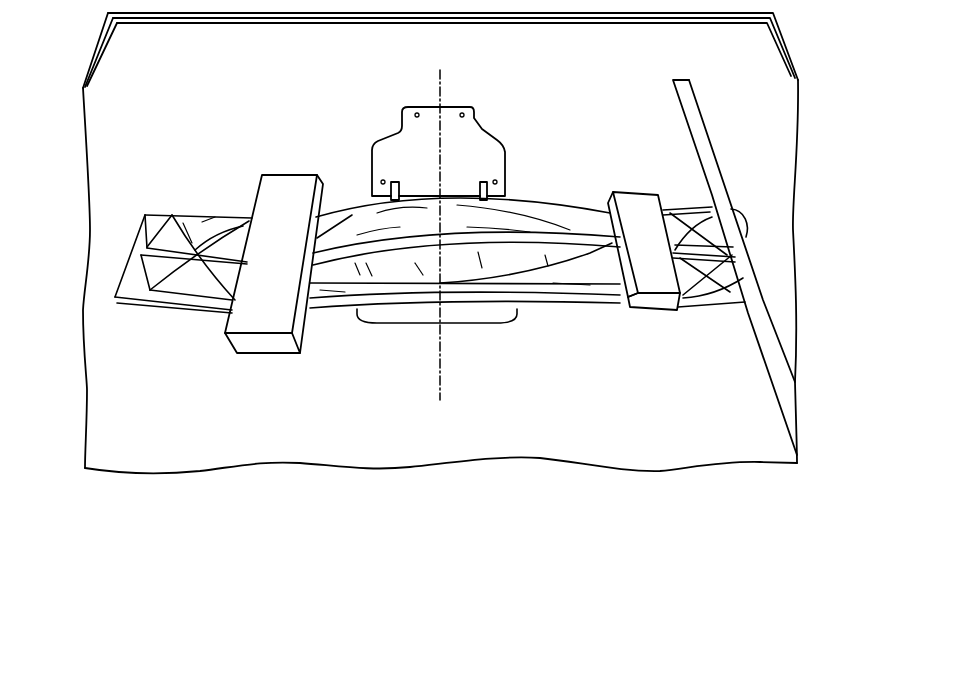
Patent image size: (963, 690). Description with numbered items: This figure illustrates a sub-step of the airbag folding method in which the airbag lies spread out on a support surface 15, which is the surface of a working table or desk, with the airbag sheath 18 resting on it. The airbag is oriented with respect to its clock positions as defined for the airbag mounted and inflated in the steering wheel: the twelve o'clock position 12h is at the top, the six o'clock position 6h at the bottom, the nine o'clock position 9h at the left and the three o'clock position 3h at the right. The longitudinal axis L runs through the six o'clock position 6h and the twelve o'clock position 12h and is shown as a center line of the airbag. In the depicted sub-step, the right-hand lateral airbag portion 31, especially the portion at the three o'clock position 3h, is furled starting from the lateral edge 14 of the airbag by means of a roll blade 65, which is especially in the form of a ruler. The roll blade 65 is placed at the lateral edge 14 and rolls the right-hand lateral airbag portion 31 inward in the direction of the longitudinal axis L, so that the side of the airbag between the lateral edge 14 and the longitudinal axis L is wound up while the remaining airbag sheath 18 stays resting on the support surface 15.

The lateral edge 14 is at (797, 279).
The support surface 15 is at (736, 80).
The airbag sheath 18 is at (400, 140).
The right-hand lateral airbag portion 31 is at (737, 213).
The roll blade 65 is at (681, 101).
The longitudinal axis L is at (440, 378).
The 12 o'clock position 12h is at (439, 57).
The 6 o'clock position 6h is at (436, 415).
The 9 o'clock position 9h is at (104, 257).
The 3 o'clock position 3h is at (780, 250).